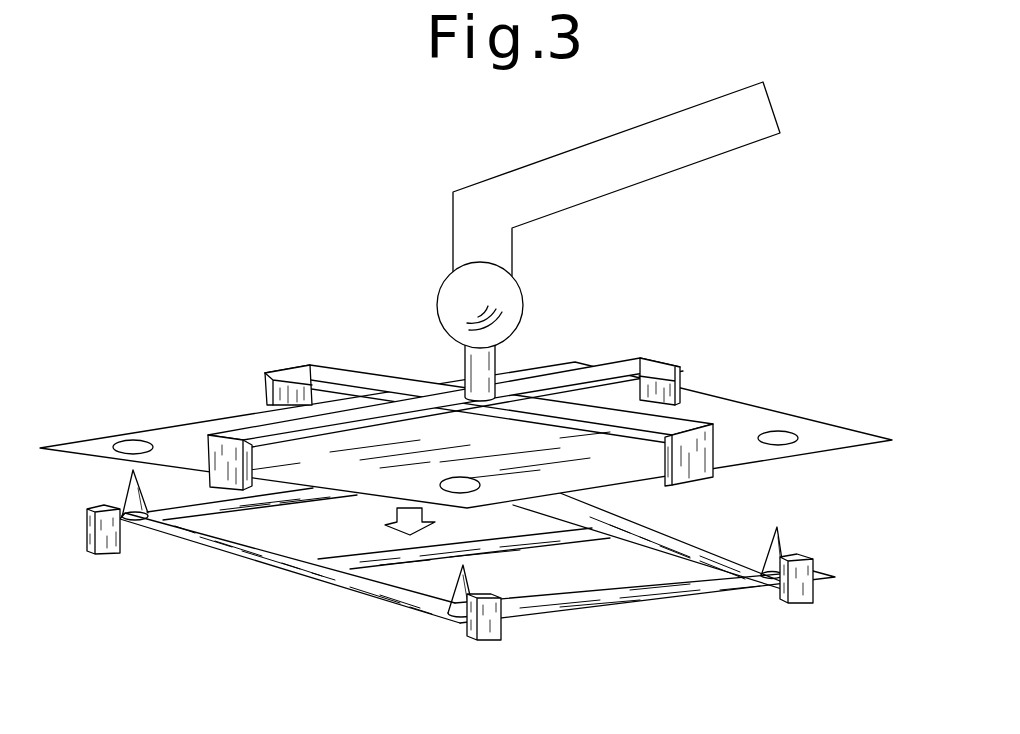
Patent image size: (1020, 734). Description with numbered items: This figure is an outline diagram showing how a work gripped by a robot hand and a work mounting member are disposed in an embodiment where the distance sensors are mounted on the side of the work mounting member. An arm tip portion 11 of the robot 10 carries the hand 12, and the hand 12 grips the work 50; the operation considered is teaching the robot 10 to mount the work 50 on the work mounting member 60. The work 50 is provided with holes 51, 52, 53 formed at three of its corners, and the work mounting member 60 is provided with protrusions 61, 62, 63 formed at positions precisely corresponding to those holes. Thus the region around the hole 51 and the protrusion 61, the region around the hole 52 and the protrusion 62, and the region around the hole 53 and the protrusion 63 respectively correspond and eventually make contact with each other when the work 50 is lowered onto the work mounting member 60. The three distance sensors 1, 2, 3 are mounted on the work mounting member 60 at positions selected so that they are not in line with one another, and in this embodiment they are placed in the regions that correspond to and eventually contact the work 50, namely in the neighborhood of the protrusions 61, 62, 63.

The distance sensor 1 is at (108, 553).
The distance sensor 2 is at (488, 642).
The distance sensor 3 is at (804, 604).
The robot 10 is at (678, 192).
The arm tip portion 11 is at (497, 308).
The hand 12 is at (394, 383).
The work 50 is at (466, 477).
The hole 51 is at (137, 440).
The hole 52 is at (470, 491).
The hole 53 is at (779, 431).
The work mounting member 60 is at (446, 594).
The protrusion 61 is at (125, 510).
The protrusion 62 is at (455, 585).
The protrusion 63 is at (781, 545).